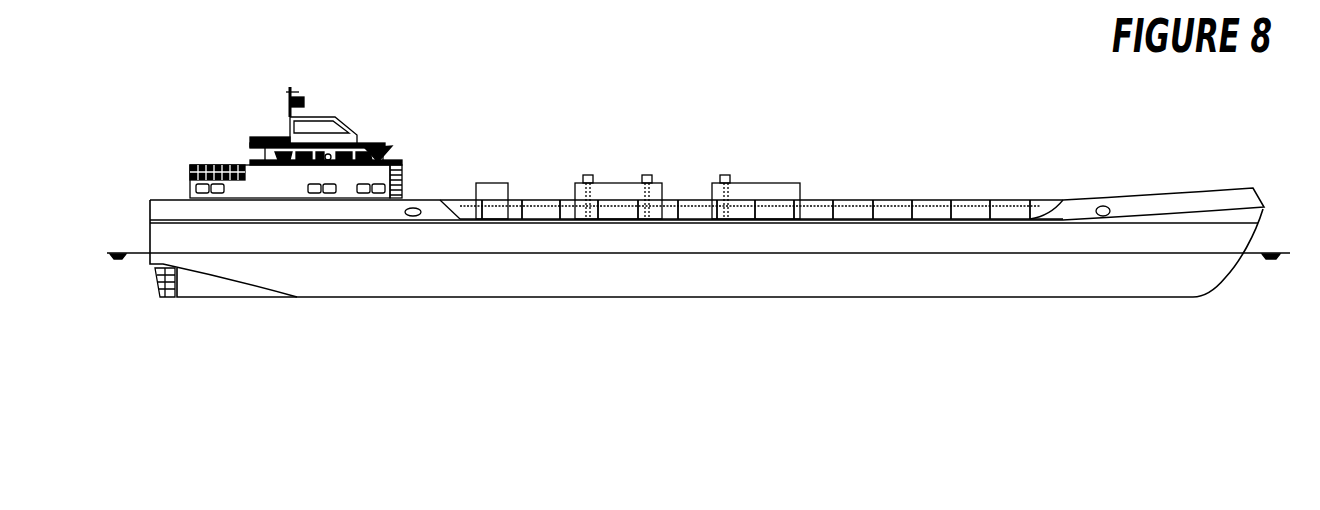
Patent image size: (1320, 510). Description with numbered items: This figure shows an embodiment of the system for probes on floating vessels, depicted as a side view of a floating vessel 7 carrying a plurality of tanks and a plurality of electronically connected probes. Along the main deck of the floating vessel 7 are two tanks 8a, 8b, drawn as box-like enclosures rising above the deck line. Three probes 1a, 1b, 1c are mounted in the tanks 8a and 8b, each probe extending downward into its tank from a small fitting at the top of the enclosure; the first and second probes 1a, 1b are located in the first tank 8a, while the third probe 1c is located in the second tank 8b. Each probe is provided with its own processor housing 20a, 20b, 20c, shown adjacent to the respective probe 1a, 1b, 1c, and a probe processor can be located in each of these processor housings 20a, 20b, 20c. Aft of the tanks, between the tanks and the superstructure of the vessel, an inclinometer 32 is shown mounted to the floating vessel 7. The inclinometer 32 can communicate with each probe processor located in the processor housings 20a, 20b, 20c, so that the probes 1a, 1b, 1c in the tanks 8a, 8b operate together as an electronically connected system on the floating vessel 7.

The floating vessel 7 is at (1244, 230).
The inclinometer 32 is at (494, 183).
The tank 8a is at (575, 192).
The tank 8b is at (800, 192).
The probe 1a is at (588, 172).
The probe 1b is at (647, 172).
The probe 1c is at (725, 172).
The processor housing 20a is at (594, 181).
The processor housing 20b is at (653, 181).
The processor housing 20c is at (731, 181).